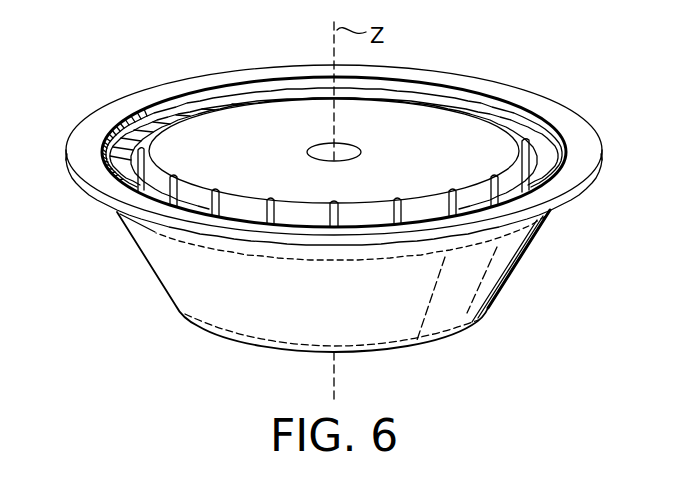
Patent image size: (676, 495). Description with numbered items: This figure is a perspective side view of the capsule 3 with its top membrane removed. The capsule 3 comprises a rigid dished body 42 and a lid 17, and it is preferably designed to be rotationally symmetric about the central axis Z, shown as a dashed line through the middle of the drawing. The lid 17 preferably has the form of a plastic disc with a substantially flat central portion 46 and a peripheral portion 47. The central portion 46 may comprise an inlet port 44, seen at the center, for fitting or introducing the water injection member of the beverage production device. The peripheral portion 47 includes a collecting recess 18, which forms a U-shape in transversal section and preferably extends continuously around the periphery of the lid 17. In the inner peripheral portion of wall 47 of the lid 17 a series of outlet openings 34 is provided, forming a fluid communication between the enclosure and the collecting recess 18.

The capsule 3 is at (342, 142).
The lid 17 is at (472, 122).
The collecting recess 18 is at (533, 137).
The outlet openings 34 is at (533, 182).
The rigid dished body 42 is at (527, 282).
The inlet port 44 is at (318, 158).
The central portion 46 is at (304, 147).
The peripheral portion 47 is at (147, 120).